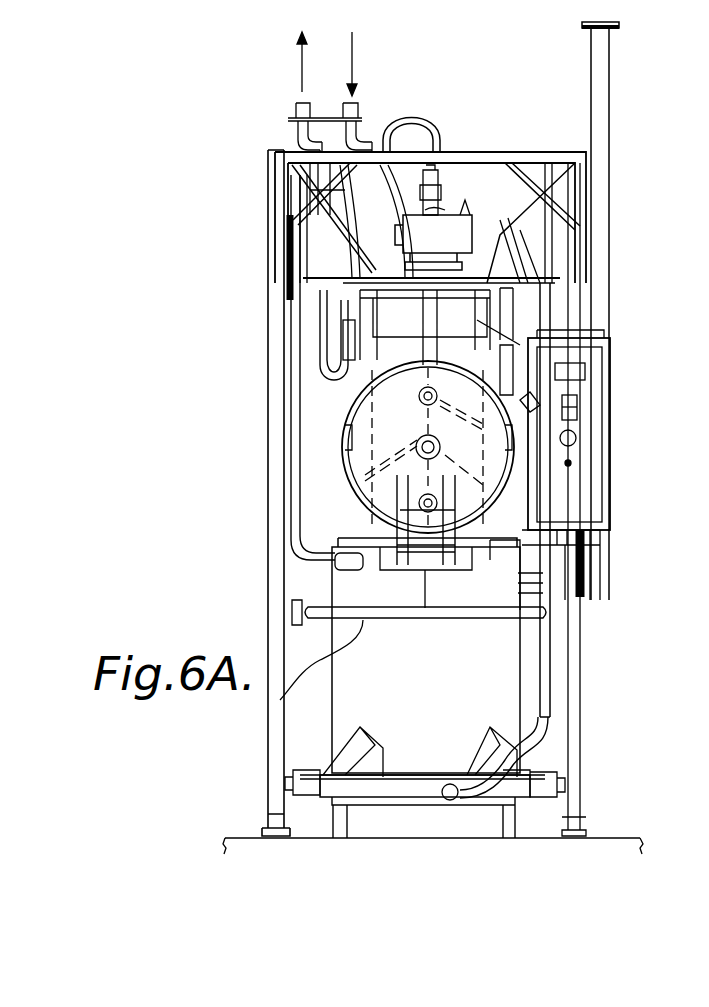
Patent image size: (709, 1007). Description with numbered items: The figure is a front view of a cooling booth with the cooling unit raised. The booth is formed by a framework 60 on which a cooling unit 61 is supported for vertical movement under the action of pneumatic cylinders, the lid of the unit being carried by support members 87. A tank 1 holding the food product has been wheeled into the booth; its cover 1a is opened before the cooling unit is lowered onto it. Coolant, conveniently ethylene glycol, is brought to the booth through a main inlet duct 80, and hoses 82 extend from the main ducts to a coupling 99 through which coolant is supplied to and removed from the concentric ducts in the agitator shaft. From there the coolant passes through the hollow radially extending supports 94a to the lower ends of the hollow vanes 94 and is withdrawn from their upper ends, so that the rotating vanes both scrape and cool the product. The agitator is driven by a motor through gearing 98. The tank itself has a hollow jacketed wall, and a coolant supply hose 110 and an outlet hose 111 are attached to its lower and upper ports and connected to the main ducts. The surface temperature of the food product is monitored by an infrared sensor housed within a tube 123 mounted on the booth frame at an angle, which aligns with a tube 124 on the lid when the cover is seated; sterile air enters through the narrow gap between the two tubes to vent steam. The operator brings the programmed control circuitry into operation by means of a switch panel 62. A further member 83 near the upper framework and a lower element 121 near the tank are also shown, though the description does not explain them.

The inlet/outlet connection manifold 80 is at (360, 117).
The valve stem 99 is at (450, 185).
The drive motor 61 is at (482, 200).
The frame brace 98 is at (487, 201).
The support bracket 124 is at (505, 258).
The cross bar 94a is at (487, 287).
The support column 94 is at (520, 335).
The control panel 62 is at (587, 387).
The indicator lamp 123 is at (571, 463).
The drum 1a is at (460, 455).
The housing 1 is at (502, 687).
The hose 110 is at (523, 757).
The truss member 82 is at (300, 172).
The diagonal brace 83 is at (322, 206).
The frame 60 is at (337, 257).
The pipe loop 87 is at (300, 275).
The feed pipe 111 is at (288, 598).
The cable 121 is at (280, 700).